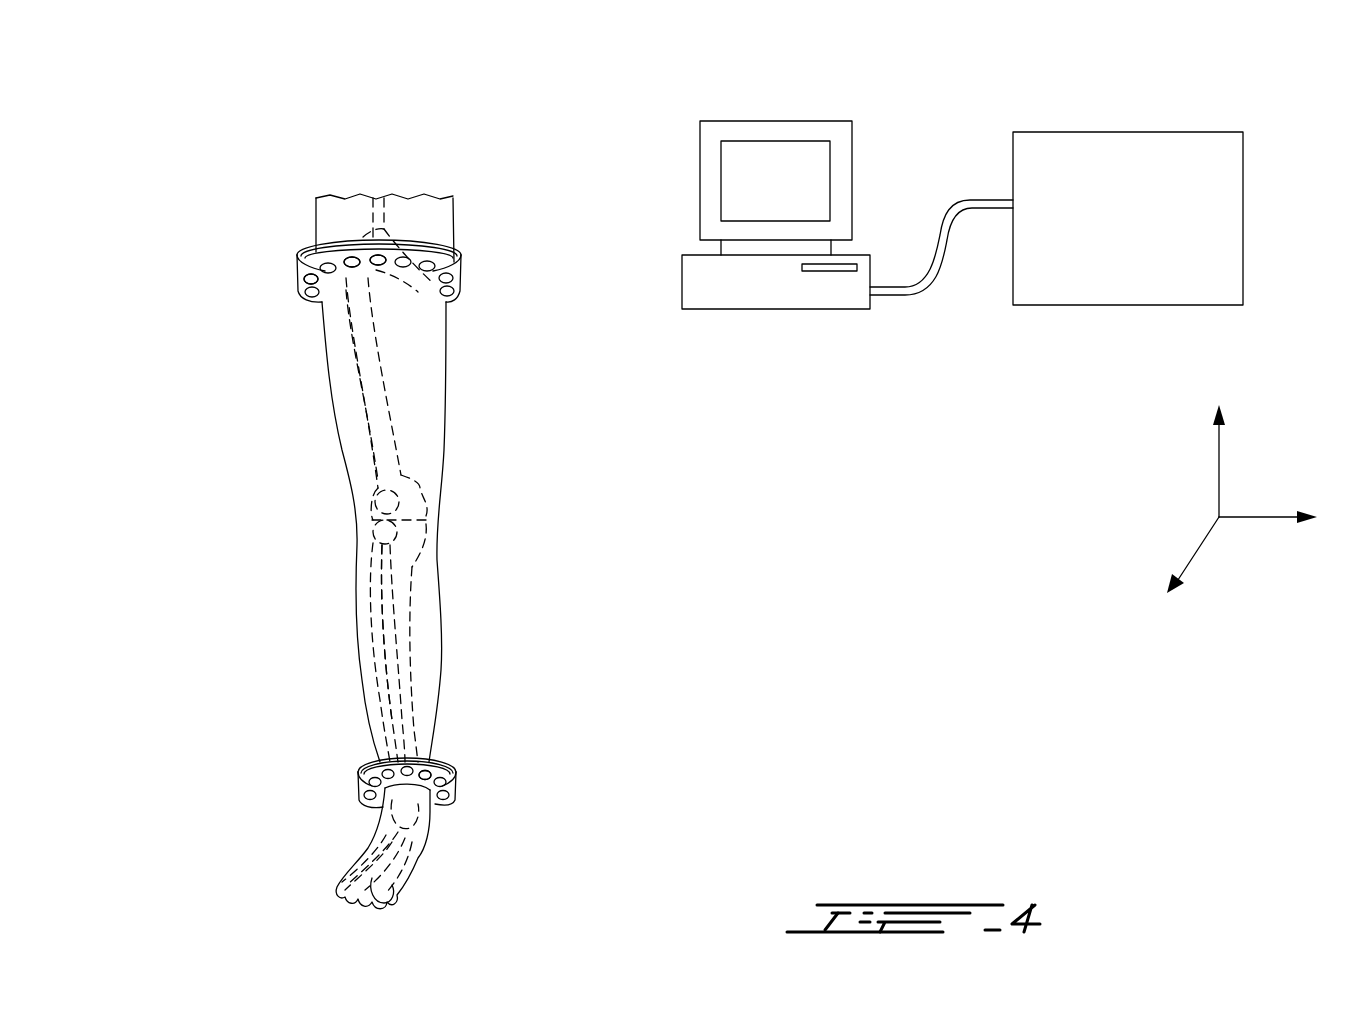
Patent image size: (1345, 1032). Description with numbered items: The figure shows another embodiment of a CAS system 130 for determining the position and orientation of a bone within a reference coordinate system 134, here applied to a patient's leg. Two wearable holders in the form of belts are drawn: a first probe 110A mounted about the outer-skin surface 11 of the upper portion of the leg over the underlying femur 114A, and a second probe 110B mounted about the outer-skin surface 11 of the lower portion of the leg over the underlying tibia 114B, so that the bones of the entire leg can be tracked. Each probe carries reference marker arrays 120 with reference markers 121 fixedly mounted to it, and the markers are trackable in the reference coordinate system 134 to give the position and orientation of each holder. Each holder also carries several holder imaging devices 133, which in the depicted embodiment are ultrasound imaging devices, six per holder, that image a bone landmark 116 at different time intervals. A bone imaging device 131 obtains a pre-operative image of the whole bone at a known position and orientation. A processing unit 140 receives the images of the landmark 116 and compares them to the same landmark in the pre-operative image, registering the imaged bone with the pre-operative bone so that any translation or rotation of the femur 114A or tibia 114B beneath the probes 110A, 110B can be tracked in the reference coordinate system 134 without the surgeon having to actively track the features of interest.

The outer-skin surface 11 is at (432, 676).
The first probe 110A is at (317, 250).
The second probe 110B is at (455, 781).
The femur 114A is at (375, 411).
The tibia 114B is at (400, 615).
The bone landmark 116 is at (363, 272).
The reference marker array 120 is at (352, 255).
The reference marker 121 is at (351, 266).
The CAS system 130 is at (1056, 157).
The bone imaging device 131 is at (1013, 141).
The holder imaging device 133 is at (427, 268).
The reference coordinate system 134 is at (1211, 555).
The processing unit 140 is at (686, 113).